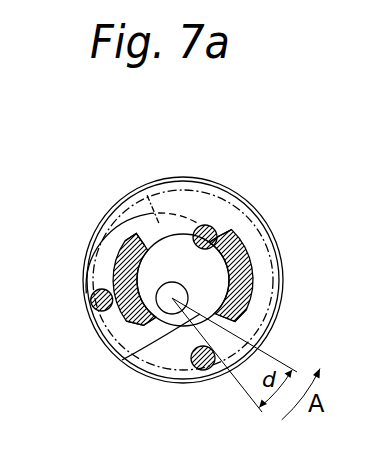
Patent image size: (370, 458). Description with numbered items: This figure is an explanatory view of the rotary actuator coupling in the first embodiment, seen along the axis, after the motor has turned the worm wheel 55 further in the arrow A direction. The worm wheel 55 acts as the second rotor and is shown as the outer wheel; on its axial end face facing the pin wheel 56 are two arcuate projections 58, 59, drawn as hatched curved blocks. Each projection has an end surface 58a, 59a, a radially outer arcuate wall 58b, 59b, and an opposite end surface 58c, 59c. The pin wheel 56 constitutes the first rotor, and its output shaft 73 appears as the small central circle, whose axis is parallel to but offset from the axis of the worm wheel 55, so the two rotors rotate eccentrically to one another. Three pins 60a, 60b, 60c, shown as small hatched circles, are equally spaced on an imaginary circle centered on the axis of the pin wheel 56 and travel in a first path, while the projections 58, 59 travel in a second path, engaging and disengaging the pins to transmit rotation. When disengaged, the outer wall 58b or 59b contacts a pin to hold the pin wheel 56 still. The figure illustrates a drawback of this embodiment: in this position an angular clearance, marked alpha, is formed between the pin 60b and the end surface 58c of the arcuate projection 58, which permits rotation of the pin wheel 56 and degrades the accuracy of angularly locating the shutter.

The worm wheel 55 is at (190, 187).
The pin wheel 56 is at (150, 197).
The arcuate projection 58 is at (262, 262).
The end surface of arcuate projection 58a is at (220, 230).
The radially outer arcuate wall 58b is at (250, 322).
The end surface of arcuate projection 58c is at (185, 328).
The arcuate projection 59 is at (125, 237).
The end surface of arcuate projection 59a is at (143, 332).
The radially outer arcuate wall 59b is at (93, 272).
The end surface of arcuate projection 59c is at (135, 234).
The pin 60a is at (210, 226).
The pin 60b is at (205, 371).
The pin 60c is at (90, 300).
The output shaft 73 is at (158, 298).